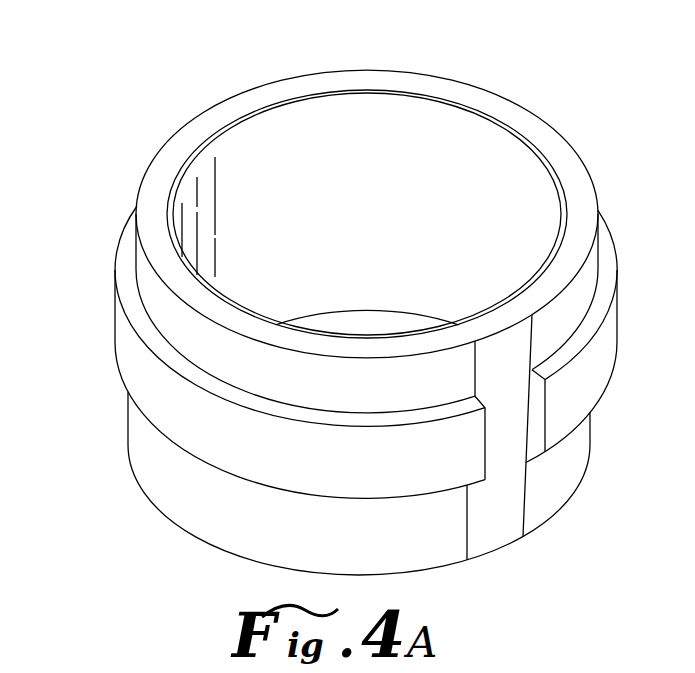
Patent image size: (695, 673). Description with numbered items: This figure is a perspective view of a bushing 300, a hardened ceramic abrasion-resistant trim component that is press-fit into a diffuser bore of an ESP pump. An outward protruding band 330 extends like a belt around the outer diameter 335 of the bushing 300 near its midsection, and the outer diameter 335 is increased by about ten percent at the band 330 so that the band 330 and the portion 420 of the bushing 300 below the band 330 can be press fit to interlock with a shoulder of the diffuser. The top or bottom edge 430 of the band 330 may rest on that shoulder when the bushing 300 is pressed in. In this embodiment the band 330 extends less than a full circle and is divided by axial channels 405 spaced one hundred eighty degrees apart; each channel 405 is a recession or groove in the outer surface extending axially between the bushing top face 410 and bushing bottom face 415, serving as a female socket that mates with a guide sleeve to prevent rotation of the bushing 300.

The bushing 300 is at (126, 50).
The axial channel 405 is at (225, 87).
The bushing top face 410 is at (543, 123).
The top or bottom edge 430 is at (127, 252).
The outward protruding band 330 is at (323, 465).
The outer diameter 335 is at (578, 488).
The portion of bushing 420 is at (322, 548).
The bushing bottom face 415 is at (187, 550).